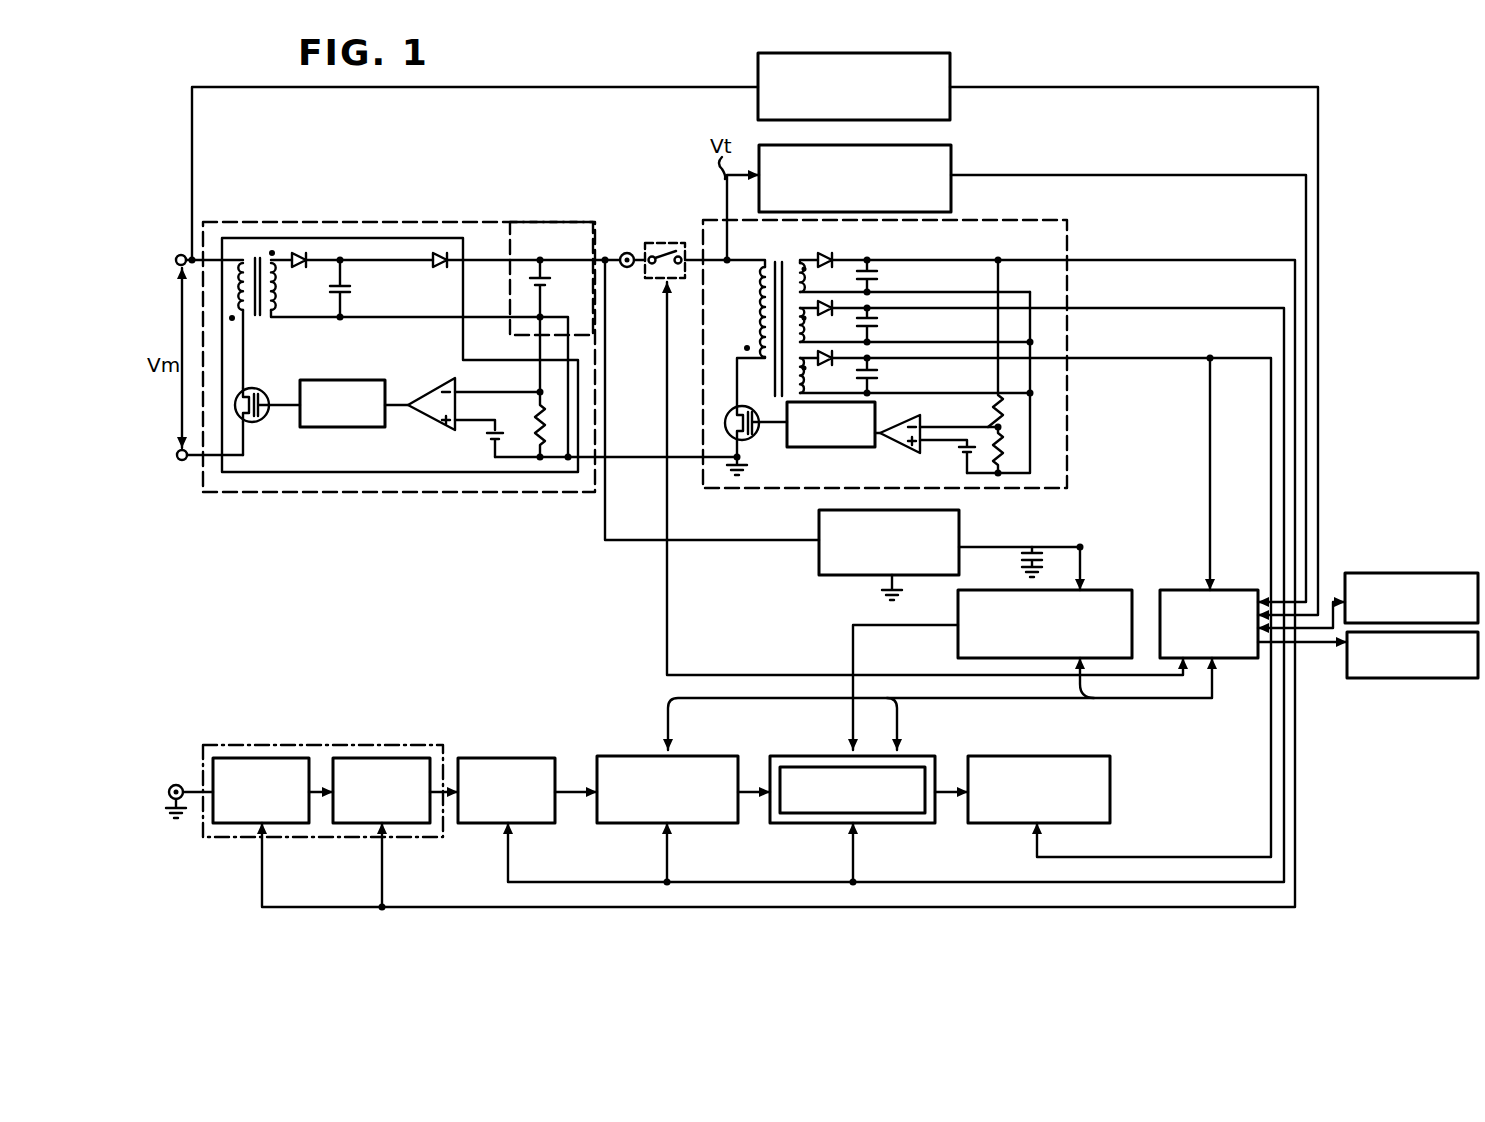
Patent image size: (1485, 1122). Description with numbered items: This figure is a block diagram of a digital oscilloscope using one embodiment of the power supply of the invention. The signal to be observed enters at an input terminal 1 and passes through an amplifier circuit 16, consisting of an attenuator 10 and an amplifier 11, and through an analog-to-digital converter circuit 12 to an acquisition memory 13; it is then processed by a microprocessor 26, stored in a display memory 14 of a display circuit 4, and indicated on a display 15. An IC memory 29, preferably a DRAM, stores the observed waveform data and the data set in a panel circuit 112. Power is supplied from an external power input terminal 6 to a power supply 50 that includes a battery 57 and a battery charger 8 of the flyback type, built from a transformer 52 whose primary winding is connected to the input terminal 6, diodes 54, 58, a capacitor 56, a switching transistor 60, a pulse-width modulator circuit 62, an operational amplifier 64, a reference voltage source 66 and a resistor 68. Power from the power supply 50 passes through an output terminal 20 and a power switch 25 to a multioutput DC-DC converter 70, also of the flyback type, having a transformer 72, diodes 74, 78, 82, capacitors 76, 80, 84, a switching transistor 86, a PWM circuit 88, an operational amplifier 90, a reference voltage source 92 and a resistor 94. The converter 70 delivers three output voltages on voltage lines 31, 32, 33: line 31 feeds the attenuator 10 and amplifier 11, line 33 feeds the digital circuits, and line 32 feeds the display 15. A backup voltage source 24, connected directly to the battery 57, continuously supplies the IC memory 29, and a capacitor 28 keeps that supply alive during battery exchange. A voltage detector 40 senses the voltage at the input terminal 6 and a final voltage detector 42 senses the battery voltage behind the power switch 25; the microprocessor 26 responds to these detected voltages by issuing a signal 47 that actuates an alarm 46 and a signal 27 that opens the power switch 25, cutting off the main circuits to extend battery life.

The input terminal 1 is at (174, 784).
The display circuit 4 is at (775, 748).
The external power input terminal 6 is at (181, 252).
The battery charger 8 is at (372, 498).
The attenuator 10 is at (232, 756).
The amplifier 11 is at (400, 756).
The analog-to-digital converter circuit 12 is at (522, 756).
The acquisition memory 13 is at (628, 754).
The display memory 14 is at (836, 798).
The display 15 is at (973, 826).
The amplifier circuit 16 is at (323, 722).
The output terminal 20 is at (627, 249).
The backup voltage source 24 is at (959, 519).
The power switch 25 is at (675, 243).
The microprocessor 26 is at (1179, 589).
The signal 27 is at (696, 674).
The capacitor 28 is at (1028, 562).
The IC memory 29 is at (1114, 589).
The voltage line 31 is at (1156, 252).
The voltage line 32 is at (1156, 300).
The voltage line 33 is at (1158, 344).
The voltage detector 40 is at (950, 70).
The final voltage detector 42 is at (951, 161).
The alarm 46 is at (1435, 679).
The signal 47 is at (1320, 647).
The power supply 50 is at (530, 275).
The transformer 52 is at (248, 247).
The diode 54 is at (300, 247).
The capacitor 56 is at (352, 288).
The battery 57 is at (530, 289).
The diode 58 is at (441, 268).
The switching transistor 60 is at (266, 391).
The pulse-width modulator circuit 62 is at (363, 382).
The operational amplifier 64 is at (434, 391).
The reference voltage source 66 is at (490, 438).
The resistor 68 is at (550, 408).
The multioutput DC-DC converter 70 is at (1075, 222).
The transformer 72 is at (770, 264).
The diode 74 is at (834, 238).
The capacitor 76 is at (884, 278).
The diode 78 is at (802, 348).
The capacitor 80 is at (880, 327).
The diode 82 is at (752, 442).
The capacitor 84 is at (868, 377).
The switching transistor 86 is at (731, 478).
The PWM circuit 88 is at (851, 448).
The operational amplifier 90 is at (993, 420).
The reference voltage source 92 is at (958, 460).
The resistor 94 is at (1008, 440).
The panel circuit 112 is at (1428, 572).